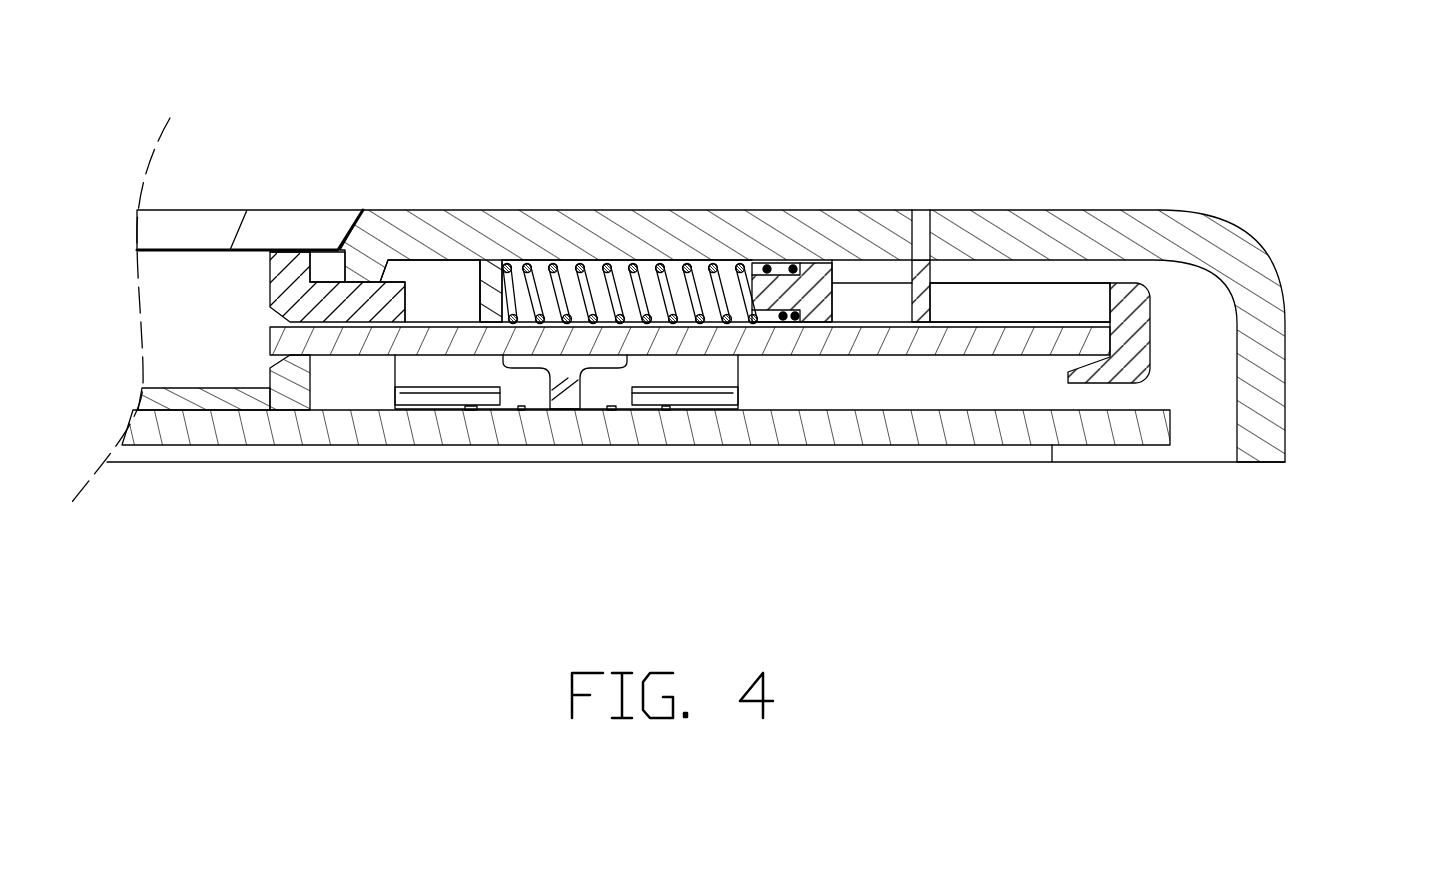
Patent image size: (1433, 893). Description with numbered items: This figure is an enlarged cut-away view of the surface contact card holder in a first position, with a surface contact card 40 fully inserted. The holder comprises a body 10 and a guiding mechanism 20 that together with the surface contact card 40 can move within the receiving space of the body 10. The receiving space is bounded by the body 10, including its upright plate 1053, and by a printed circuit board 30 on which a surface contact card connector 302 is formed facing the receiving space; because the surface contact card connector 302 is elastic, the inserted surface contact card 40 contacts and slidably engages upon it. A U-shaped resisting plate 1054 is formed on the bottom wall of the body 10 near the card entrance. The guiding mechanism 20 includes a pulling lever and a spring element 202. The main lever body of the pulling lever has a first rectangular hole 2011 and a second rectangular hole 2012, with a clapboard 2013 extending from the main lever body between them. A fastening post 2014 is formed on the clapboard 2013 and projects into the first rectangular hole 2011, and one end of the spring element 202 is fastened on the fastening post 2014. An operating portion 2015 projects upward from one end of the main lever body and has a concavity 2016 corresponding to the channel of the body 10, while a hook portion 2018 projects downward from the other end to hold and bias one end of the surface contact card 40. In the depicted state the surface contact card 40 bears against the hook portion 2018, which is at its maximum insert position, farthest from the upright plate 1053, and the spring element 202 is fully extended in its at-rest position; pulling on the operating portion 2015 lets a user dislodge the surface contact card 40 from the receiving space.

The body 10 is at (1262, 348).
The guiding mechanism 20 is at (383, 305).
The printed circuit board 30 is at (342, 430).
The surface contact card 40 is at (808, 342).
The spring element 202 is at (622, 273).
The surface contact card connector 302 is at (562, 368).
The upright plate 1053 is at (924, 275).
The U-shaped resisting plate 1054 is at (492, 272).
The first rectangular hole 2011 is at (598, 262).
The second rectangular hole 2012 is at (1013, 297).
The clapboard 2013 is at (807, 275).
The fastening post 2014 is at (742, 273).
The operating portion 2015 is at (293, 268).
The concavity 2016 is at (325, 265).
The hook portion 2018 is at (1132, 325).